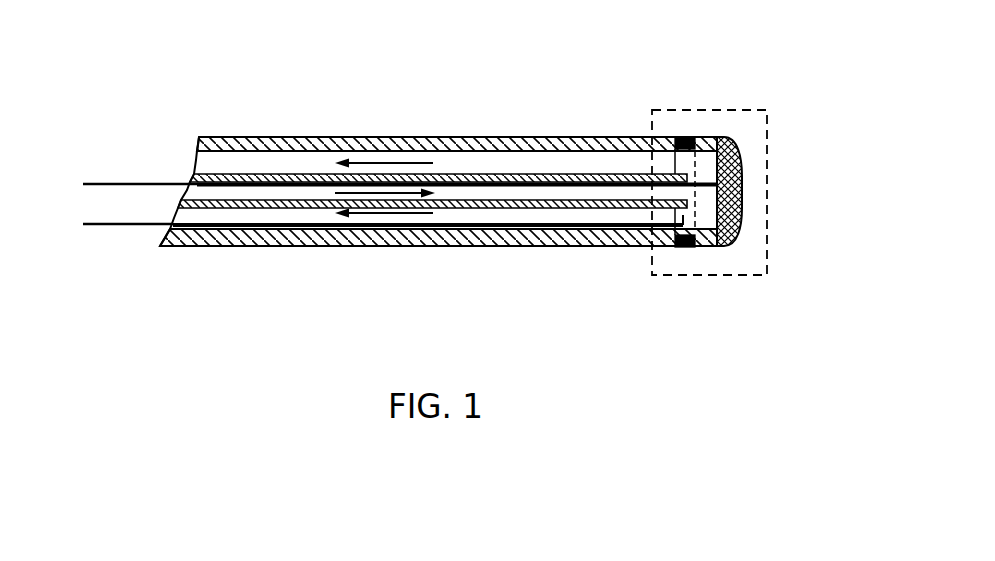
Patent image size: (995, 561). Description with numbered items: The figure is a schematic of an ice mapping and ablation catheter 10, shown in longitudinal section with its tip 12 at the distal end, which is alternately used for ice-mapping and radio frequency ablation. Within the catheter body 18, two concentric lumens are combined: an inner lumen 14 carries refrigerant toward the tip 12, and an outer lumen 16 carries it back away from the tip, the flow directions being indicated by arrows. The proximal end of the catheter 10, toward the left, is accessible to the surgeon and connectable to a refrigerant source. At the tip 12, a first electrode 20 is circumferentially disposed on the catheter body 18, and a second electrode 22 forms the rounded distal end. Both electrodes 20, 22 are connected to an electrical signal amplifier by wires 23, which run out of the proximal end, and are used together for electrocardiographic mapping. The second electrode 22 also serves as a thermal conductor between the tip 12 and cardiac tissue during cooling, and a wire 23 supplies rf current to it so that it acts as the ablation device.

The ice mapping and ablation catheter 10 is at (366, 277).
The tip 12 is at (768, 145).
The inner lumen 14 is at (486, 195).
The outer lumen 16 is at (575, 165).
The catheter body 18 is at (567, 246).
The first electrode 20 is at (683, 138).
The second electrode 22 is at (742, 190).
The wires 23 is at (108, 222).